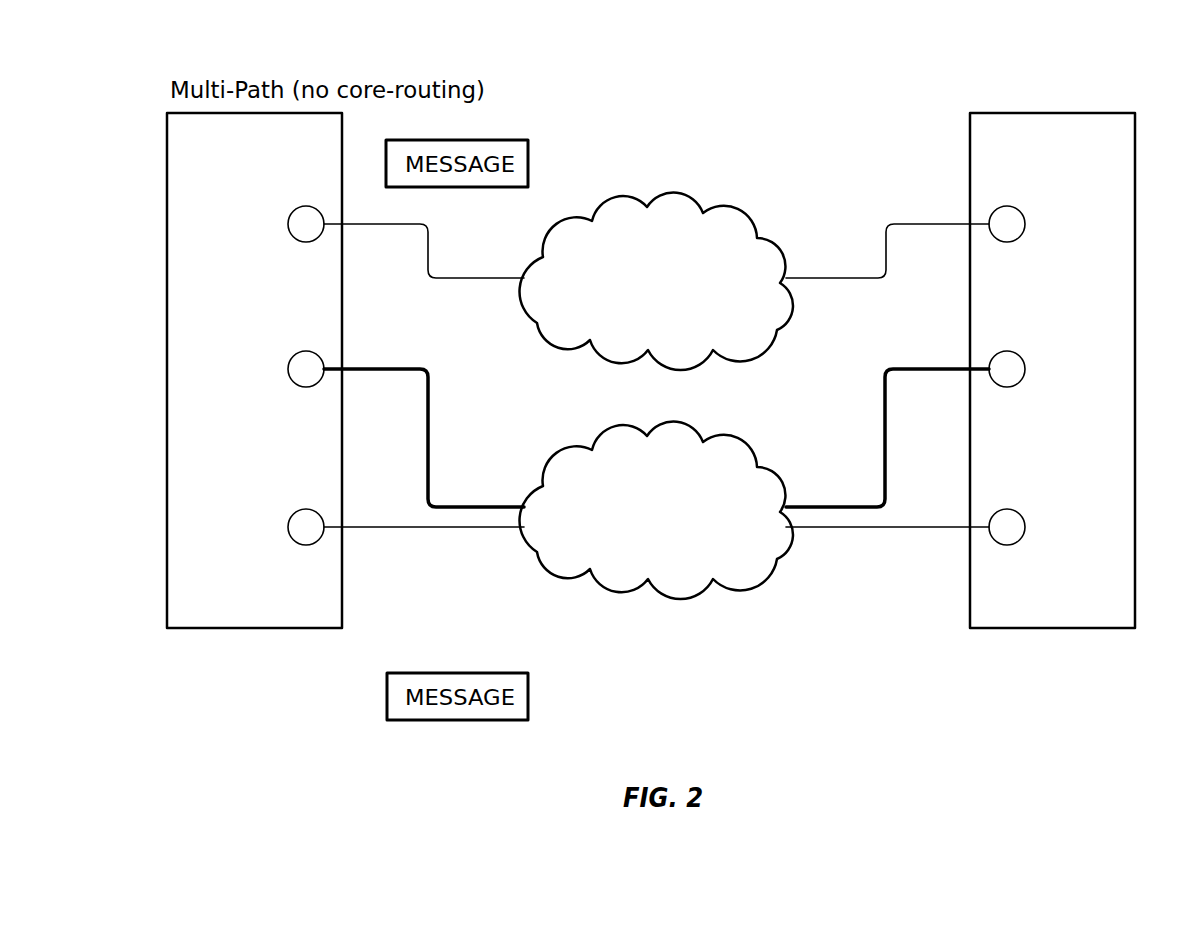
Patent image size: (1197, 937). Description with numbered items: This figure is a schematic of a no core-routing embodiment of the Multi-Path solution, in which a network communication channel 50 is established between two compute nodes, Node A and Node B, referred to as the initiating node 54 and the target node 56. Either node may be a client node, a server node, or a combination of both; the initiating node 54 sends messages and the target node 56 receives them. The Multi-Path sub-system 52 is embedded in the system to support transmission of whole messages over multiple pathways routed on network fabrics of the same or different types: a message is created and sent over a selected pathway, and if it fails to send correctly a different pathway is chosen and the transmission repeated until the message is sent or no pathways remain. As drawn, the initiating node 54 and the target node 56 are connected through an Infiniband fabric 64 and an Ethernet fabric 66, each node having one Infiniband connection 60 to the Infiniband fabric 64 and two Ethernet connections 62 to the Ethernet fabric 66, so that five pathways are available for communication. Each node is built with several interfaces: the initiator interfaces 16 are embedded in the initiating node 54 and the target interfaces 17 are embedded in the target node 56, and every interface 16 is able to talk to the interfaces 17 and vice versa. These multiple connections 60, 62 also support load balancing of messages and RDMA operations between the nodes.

The initiator interfaces 16 is at (307, 242).
The target interfaces 17 is at (1005, 242).
The network communication channel 50 is at (790, 660).
The Multi-Path sub-system 52 is at (822, 118).
The initiating node 54 is at (253, 628).
The target node 56 is at (1050, 628).
The Infiniband connection 60 is at (368, 226).
The Ethernet connections 62 is at (428, 437).
The Infiniband fabric 64 is at (653, 228).
The Ethernet fabric 66 is at (730, 557).